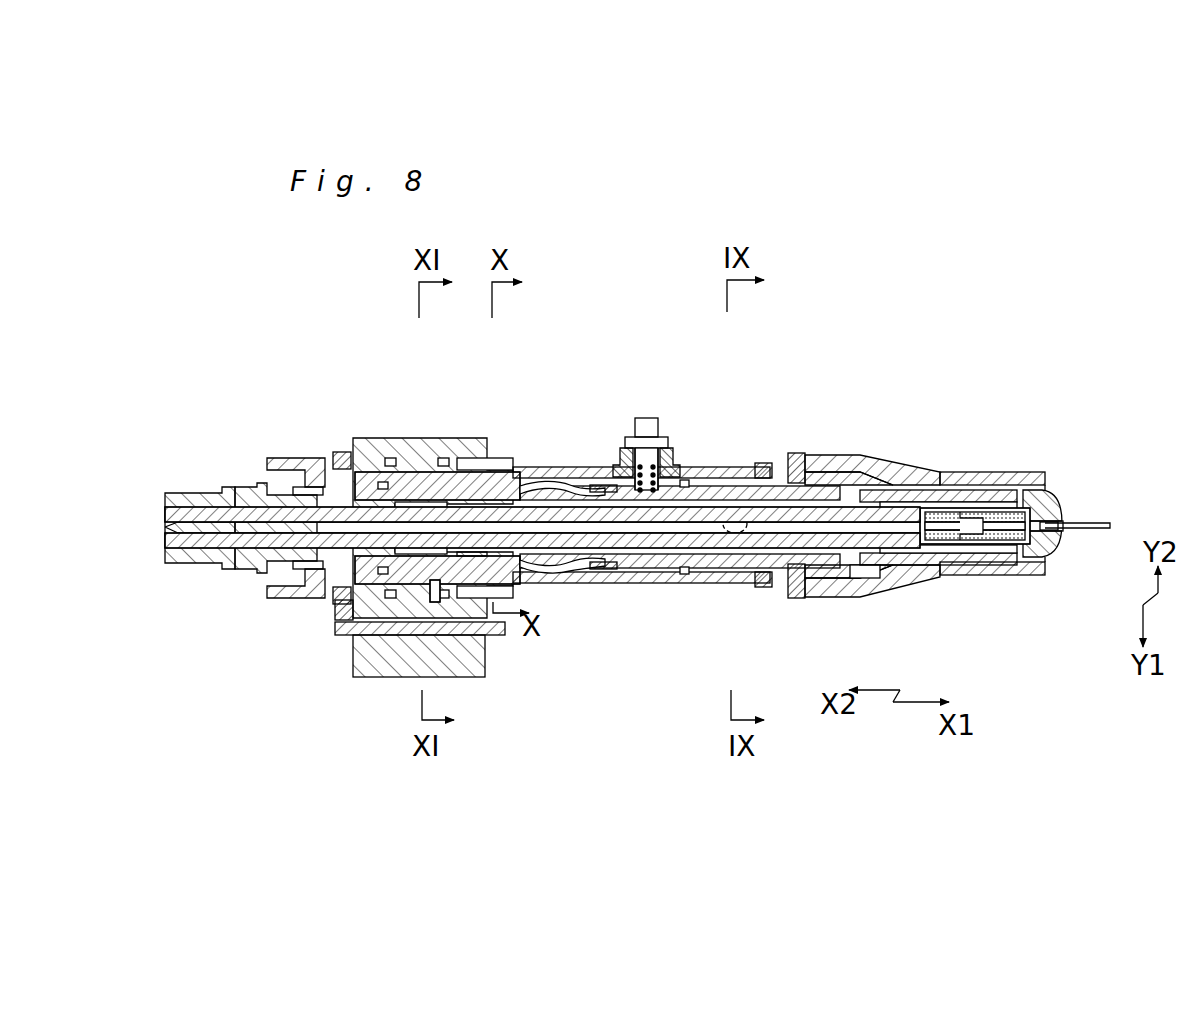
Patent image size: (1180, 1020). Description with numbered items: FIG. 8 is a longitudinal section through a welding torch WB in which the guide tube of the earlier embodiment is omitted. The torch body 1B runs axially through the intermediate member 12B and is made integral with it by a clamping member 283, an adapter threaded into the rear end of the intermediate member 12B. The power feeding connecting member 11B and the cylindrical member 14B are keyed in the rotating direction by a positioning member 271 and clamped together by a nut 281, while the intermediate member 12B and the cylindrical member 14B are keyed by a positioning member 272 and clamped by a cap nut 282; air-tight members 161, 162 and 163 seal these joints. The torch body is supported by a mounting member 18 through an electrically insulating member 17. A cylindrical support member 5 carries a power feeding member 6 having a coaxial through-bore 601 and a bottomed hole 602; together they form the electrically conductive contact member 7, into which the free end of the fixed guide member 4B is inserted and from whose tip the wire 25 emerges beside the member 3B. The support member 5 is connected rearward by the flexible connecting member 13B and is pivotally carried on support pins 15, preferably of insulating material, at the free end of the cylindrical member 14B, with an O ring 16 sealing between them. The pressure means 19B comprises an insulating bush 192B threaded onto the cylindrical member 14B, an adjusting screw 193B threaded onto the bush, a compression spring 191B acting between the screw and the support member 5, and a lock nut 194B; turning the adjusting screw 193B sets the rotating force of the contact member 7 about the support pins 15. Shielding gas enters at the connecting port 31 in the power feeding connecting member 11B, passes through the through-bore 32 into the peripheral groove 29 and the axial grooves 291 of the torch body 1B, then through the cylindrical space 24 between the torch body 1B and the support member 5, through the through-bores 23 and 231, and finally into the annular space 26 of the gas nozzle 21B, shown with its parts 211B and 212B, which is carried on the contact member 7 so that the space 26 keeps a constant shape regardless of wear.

The welding torch WB is at (920, 289).
The clamping member 283 is at (225, 567).
The intermediate member 12B is at (312, 572).
The clamping member 282 is at (270, 466).
The positioning member 272 is at (300, 486).
The clamping member 281 is at (342, 452).
The groove 29 is at (418, 500).
The air-tight member 163 is at (390, 458).
The air-tight member 162 is at (383, 482).
The air-tight member 161 is at (465, 475).
The positioning member 271 is at (515, 460).
The power feeding connecting member 11B is at (348, 603).
The electrically insulating member 17 is at (372, 630).
The mounting member 18 is at (378, 655).
The grooves 291 is at (470, 570).
The connecting port 31 is at (438, 590).
The through-bore 32 is at (435, 591).
The cylindrical member 14B is at (556, 467).
The inner tube 13B is at (575, 568).
The resilient air-tight member 16 is at (686, 574).
The cylindrical space 24 is at (768, 588).
The support pins 15 is at (745, 513).
The pressure means 19B is at (704, 400).
The nut 194B is at (638, 420).
The adjusting screw 193B is at (645, 440).
The bush 192B is at (665, 452).
The compression spring 191B is at (656, 480).
The through-bore 23 is at (800, 597).
The gas nozzle 21B is at (907, 470).
The outer housing wall 211B is at (840, 456).
The inner housing wall 212B is at (880, 472).
The through-bore 231 is at (865, 580).
The annular space 26 is at (962, 484).
The contact member 7 is at (975, 581).
The support member 5 is at (985, 566).
The power feeding member 6 is at (1020, 553).
The hole with a bottom 602 is at (1030, 500).
The through-bore 601 is at (1052, 526).
The wire 25 is at (1088, 524).
The detector 4B is at (973, 596).
The detector housing 3B is at (936, 545).
The torch body 1B is at (916, 541).